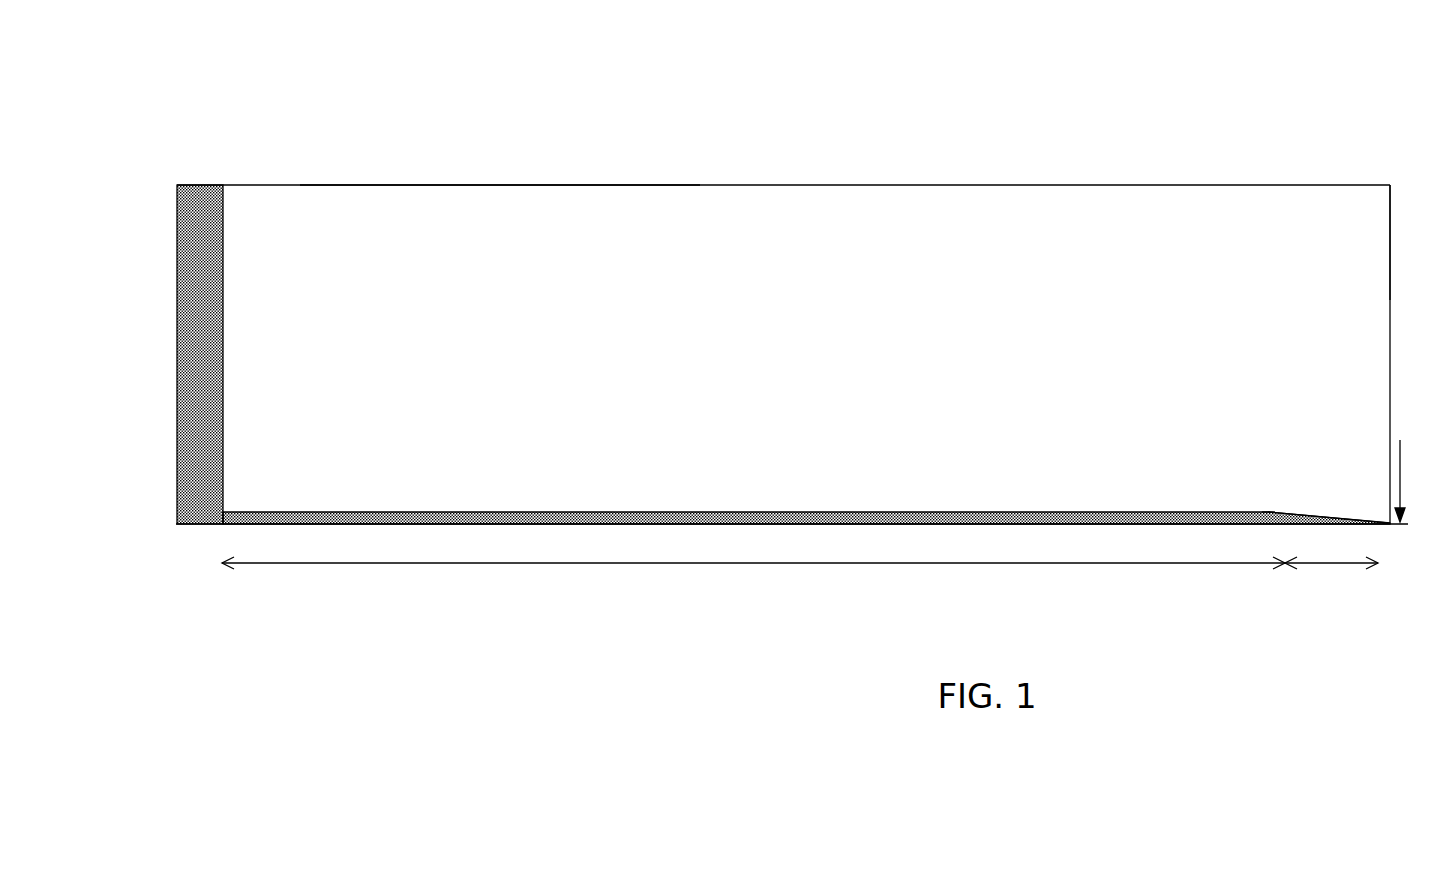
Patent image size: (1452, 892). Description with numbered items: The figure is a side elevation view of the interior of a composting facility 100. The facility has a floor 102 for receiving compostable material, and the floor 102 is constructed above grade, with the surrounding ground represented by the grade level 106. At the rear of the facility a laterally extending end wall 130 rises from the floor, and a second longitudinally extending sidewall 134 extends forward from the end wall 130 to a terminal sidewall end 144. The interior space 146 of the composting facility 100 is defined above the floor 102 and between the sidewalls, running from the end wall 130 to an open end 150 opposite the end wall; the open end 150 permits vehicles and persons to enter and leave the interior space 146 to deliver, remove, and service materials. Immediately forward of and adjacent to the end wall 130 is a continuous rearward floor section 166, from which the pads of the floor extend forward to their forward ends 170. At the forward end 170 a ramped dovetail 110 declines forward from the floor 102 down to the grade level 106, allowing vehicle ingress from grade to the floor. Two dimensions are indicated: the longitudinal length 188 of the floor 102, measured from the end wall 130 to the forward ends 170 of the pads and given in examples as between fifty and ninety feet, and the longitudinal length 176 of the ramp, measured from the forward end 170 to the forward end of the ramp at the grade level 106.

The composting facility 100 is at (998, 162).
The end wall 130 is at (201, 192).
The floor 102 is at (880, 512).
The second longitudinally extending sidewall 134 is at (455, 185).
The terminal sidewall end 144 is at (1375, 183).
The interior space 146 is at (1080, 300).
The open end 150 is at (1368, 305).
The continuous rearward floor section 166 is at (237, 512).
The forward end of pad 170 is at (1265, 510).
The ramped dovetail 110 is at (1316, 512).
The grade level 106 is at (1410, 467).
The longitudinal length of the floor 188 is at (696, 565).
The longitudinal length of the ramp 176 is at (1332, 567).